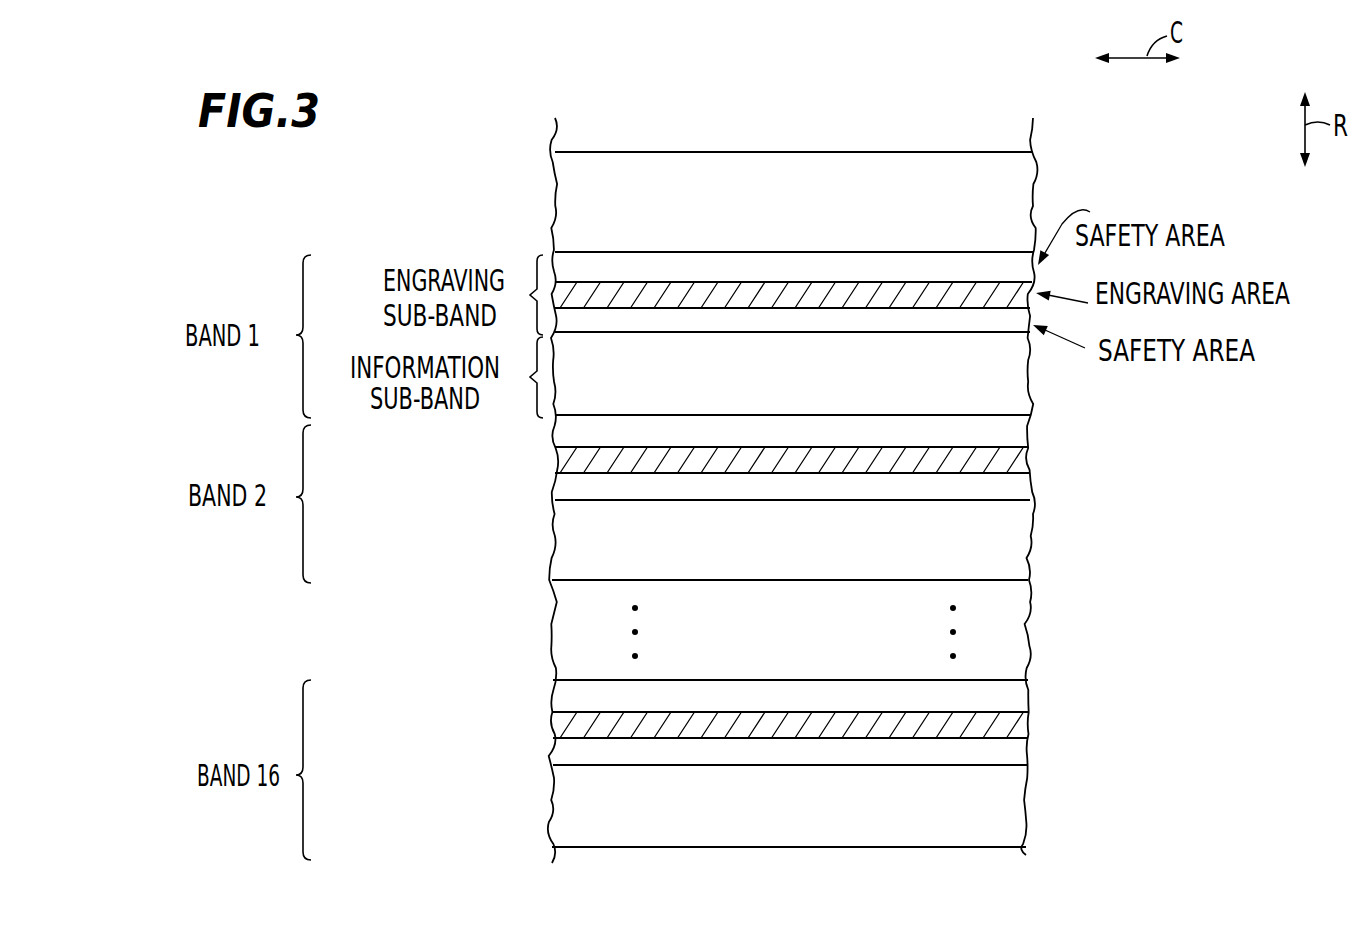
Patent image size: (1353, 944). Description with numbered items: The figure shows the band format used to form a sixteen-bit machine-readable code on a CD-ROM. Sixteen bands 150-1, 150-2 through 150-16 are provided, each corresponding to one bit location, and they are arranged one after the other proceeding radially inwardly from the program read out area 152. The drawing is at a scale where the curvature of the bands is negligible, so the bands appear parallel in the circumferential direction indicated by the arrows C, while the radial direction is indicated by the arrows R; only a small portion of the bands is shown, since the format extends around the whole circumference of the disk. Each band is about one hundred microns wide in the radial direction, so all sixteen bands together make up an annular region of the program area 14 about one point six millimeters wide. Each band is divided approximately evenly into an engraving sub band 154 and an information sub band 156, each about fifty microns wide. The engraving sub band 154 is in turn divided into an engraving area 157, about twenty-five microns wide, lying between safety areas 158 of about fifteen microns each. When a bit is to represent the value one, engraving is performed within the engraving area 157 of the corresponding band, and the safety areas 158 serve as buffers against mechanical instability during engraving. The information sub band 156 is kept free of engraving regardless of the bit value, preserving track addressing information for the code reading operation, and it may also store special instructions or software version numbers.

The program area 14 is at (500, 204).
The program read out area 152 is at (1040, 203).
The engraving sub band 154 is at (552, 250).
The information sub band 156 is at (546, 410).
The engraving area 157 is at (767, 295).
The safety area 158 is at (905, 253).
The band 150-1 is at (1046, 380).
The band 150-2 is at (1042, 488).
The band 150-16 is at (1073, 741).